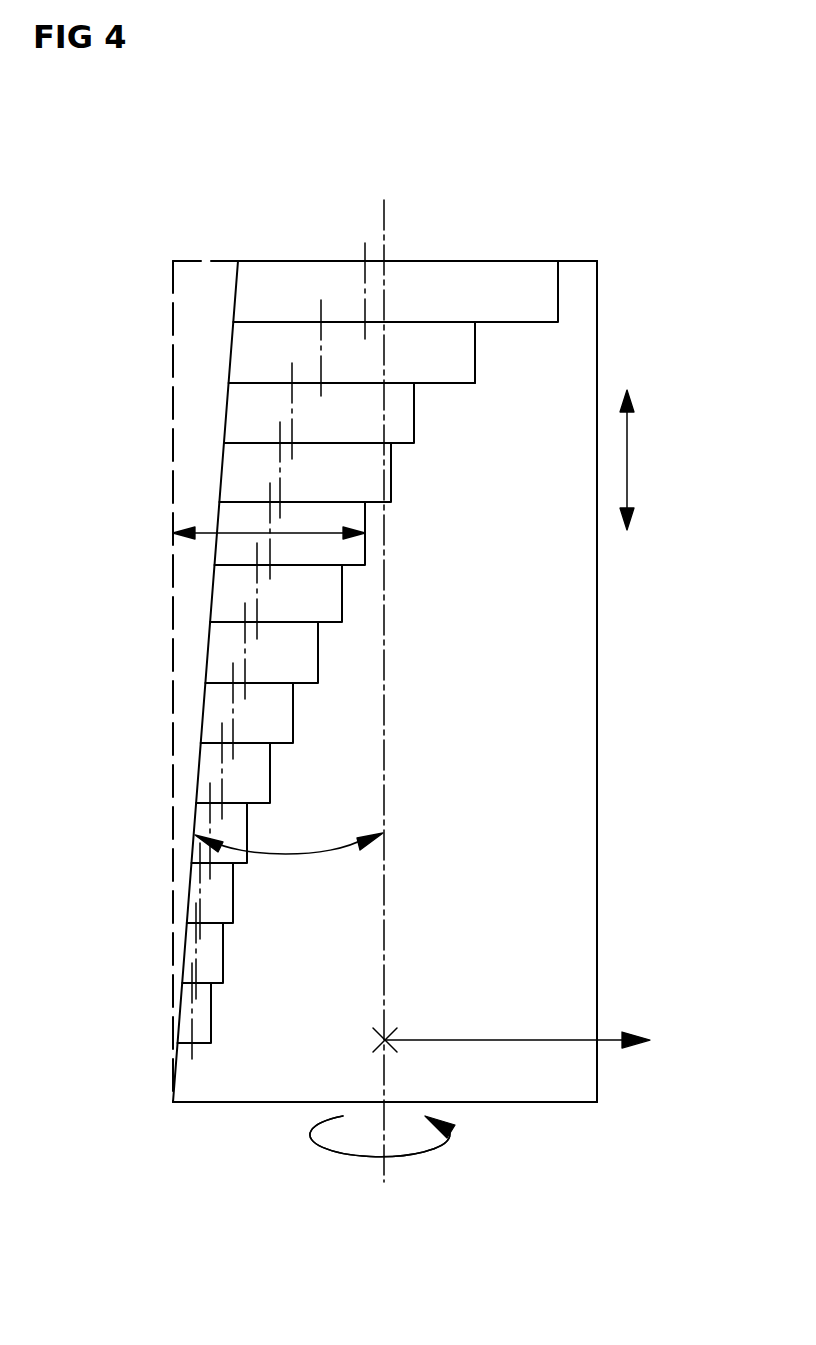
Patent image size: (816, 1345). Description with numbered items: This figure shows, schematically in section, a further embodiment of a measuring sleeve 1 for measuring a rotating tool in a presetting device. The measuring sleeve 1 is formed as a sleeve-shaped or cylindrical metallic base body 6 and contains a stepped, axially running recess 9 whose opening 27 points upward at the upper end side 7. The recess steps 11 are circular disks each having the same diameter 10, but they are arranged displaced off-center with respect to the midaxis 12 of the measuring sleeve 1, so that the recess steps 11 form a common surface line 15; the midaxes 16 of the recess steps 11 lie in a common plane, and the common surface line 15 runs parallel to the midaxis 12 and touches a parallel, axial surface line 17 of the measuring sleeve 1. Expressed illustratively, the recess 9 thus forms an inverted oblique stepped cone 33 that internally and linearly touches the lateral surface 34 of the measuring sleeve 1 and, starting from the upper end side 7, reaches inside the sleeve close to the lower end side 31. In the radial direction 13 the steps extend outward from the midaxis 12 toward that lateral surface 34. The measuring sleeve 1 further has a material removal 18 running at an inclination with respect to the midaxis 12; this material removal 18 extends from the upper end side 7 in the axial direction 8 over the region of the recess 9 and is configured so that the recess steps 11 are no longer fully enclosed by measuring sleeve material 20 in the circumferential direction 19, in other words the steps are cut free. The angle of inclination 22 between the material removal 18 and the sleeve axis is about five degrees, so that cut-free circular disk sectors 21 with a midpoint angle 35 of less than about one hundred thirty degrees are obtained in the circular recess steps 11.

The measuring sleeve 1 is at (607, 902).
The base body 6 is at (508, 638).
The upper end side 7 is at (570, 261).
The axial direction 8 is at (627, 465).
The recess 9 is at (262, 414).
The diameter 10 is at (240, 542).
The recess steps 11 is at (262, 289).
The midaxis 12 is at (383, 1143).
The radial direction 13 is at (493, 1038).
The common surface line 15 is at (172, 928).
The midaxes of the recess steps 16 is at (363, 292).
The surface line of the measuring sleeve 17 is at (193, 1003).
The material removal 18 is at (195, 461).
The circumferential direction 19 is at (430, 1155).
The measuring sleeve material 20 is at (425, 748).
The circular disk sectors 21 is at (489, 285).
The angle of inclination 22 is at (287, 852).
The opening 27 is at (293, 236).
The lower end side 31 is at (262, 1102).
The inverted oblique stepped cone 33 is at (203, 342).
The lateral surface 34 is at (597, 770).
The midpoint angle 35 is at (418, 354).